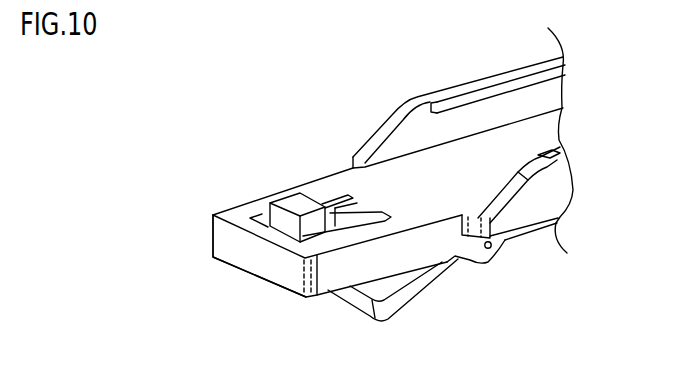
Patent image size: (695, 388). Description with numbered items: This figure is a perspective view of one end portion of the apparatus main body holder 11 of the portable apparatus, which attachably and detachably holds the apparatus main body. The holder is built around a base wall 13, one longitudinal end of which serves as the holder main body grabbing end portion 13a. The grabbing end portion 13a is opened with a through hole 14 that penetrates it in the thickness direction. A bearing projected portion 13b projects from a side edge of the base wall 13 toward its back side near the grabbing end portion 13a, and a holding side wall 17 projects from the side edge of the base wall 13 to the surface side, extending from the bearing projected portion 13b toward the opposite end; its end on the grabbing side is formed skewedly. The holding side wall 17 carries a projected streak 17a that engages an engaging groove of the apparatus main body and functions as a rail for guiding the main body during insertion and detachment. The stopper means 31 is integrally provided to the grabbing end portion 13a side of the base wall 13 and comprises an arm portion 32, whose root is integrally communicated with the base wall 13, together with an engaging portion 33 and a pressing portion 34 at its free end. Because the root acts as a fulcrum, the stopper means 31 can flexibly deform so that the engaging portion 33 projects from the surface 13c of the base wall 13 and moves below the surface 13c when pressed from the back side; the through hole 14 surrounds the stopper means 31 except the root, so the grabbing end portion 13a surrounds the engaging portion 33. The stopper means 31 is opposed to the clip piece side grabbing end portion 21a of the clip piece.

The apparatus main body holder 11 is at (355, 131).
The base wall 13 is at (427, 240).
The holder main body grabbing end portion 13a is at (277, 265).
The bearing projected portion 13b is at (490, 262).
The surface of the base wall 13c is at (520, 162).
The through hole 14 is at (333, 197).
The holding side wall 17 is at (423, 123).
The projected streak 17a is at (507, 90).
The clip piece side grabbing end portion 21a is at (407, 303).
The stopper means 31 is at (265, 217).
The arm portion 32 is at (367, 180).
The engaging portion 33 is at (300, 210).
The pressing portion 34 is at (335, 220).